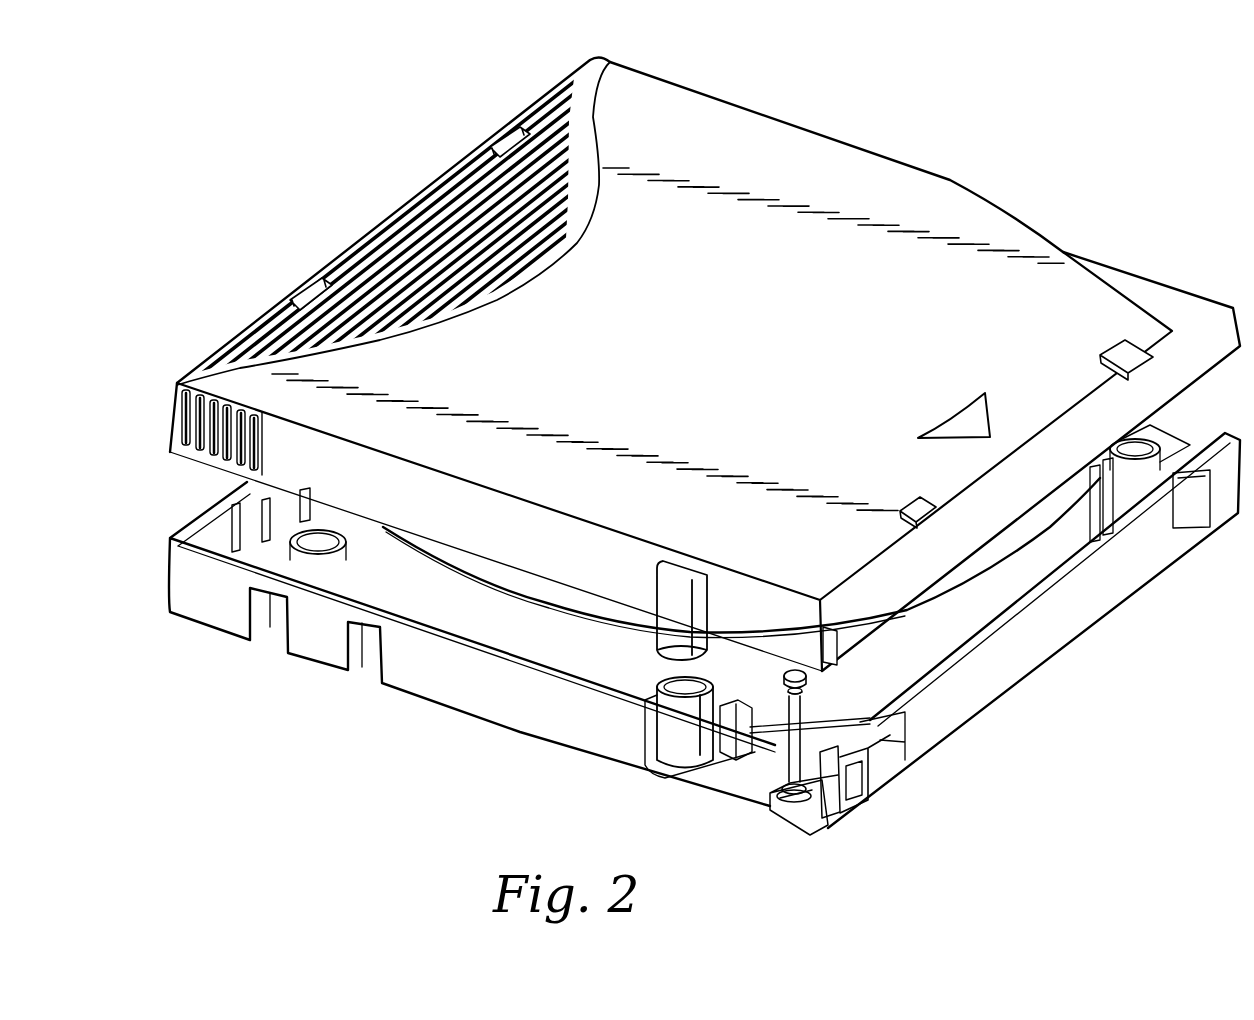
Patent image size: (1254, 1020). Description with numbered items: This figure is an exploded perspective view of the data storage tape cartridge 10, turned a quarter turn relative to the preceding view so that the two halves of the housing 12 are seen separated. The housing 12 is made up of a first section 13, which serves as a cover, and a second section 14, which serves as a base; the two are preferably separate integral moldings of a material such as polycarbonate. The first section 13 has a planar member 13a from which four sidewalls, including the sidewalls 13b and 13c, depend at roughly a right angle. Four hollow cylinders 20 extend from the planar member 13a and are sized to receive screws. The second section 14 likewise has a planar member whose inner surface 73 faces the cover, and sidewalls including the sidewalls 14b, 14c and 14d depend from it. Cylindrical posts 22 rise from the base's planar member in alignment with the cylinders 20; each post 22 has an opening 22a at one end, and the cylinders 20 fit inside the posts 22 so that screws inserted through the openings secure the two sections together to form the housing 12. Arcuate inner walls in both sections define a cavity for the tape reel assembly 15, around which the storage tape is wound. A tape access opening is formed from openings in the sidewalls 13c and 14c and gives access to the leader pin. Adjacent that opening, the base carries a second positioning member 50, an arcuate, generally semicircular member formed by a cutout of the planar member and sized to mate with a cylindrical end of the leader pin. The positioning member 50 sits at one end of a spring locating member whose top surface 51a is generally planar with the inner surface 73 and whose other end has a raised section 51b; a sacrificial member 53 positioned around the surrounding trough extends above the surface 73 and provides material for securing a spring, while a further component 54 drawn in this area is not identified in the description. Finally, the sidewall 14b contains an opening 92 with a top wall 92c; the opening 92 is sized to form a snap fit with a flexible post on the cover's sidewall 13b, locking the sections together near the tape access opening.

The data storage tape cartridge 10 is at (1092, 182).
The housing 12 is at (1160, 264).
The first section 13 is at (821, 139).
The planar member 13a is at (814, 418).
The sidewall 13b is at (1020, 513).
The sidewall 13c is at (503, 545).
The second section 14 is at (533, 740).
The sidewall 14b is at (1082, 598).
The sidewall 14c is at (462, 700).
The sidewall 14d is at (230, 520).
The tape reel assembly 15 is at (927, 635).
The cylinders 20 is at (683, 590).
The cylindrical posts 22 is at (1121, 499).
The opening 22a is at (1157, 440).
The second positioning member 50 is at (783, 783).
The top surface 51a is at (823, 822).
The raised section 51b is at (817, 733).
The sacrificial member 53 is at (812, 735).
The bushing 54 is at (775, 812).
The inner surface 73 is at (720, 768).
The opening 92 is at (860, 813).
The top wall 92c is at (865, 790).